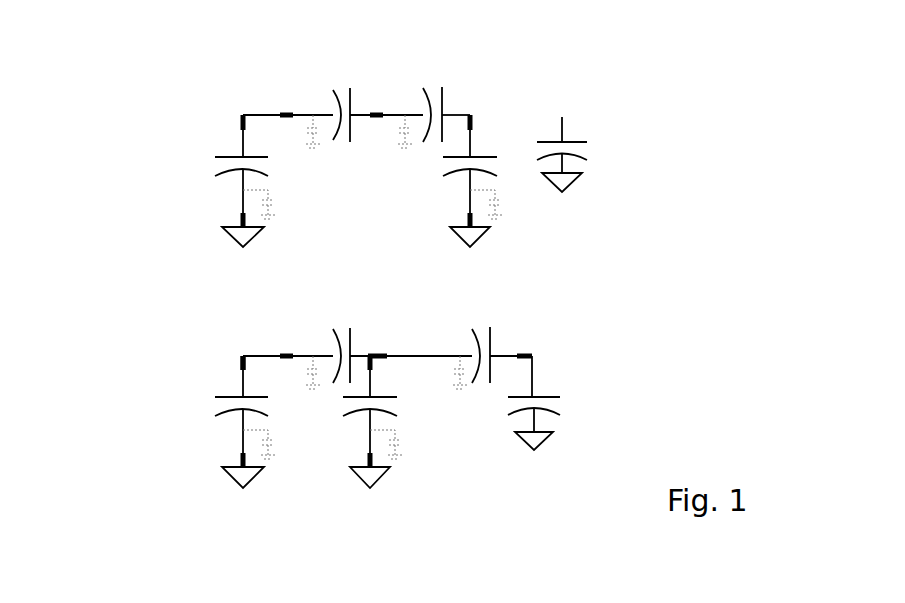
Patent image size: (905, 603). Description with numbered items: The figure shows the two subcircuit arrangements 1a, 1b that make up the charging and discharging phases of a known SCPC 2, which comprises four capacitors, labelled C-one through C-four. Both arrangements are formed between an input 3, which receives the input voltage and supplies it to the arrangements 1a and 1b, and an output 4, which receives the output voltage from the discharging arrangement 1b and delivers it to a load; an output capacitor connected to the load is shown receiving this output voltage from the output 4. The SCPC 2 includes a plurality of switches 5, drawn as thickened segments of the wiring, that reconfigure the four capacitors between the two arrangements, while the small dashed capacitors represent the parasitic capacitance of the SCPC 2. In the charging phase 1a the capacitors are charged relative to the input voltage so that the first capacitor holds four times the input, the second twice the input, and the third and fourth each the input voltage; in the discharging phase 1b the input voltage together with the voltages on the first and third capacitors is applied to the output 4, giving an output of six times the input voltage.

The charging phase subcircuit arrangement 1a is at (152, 167).
The discharging phase subcircuit arrangement 1b is at (155, 417).
The SCPC 2 is at (690, 262).
The input 3 is at (240, 112).
The output 4 is at (561, 117).
The switches 5 is at (287, 115).